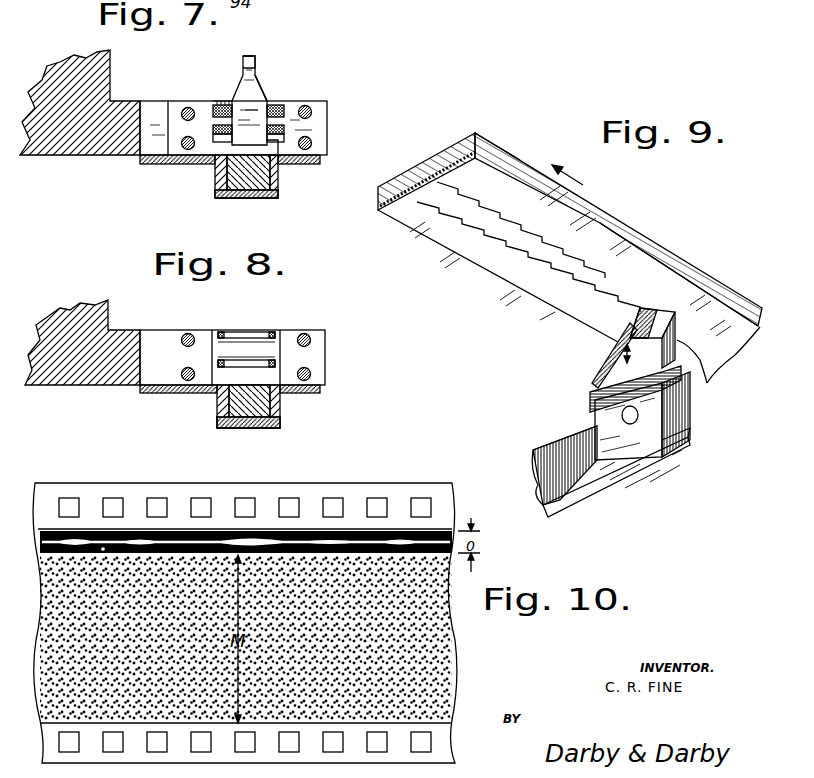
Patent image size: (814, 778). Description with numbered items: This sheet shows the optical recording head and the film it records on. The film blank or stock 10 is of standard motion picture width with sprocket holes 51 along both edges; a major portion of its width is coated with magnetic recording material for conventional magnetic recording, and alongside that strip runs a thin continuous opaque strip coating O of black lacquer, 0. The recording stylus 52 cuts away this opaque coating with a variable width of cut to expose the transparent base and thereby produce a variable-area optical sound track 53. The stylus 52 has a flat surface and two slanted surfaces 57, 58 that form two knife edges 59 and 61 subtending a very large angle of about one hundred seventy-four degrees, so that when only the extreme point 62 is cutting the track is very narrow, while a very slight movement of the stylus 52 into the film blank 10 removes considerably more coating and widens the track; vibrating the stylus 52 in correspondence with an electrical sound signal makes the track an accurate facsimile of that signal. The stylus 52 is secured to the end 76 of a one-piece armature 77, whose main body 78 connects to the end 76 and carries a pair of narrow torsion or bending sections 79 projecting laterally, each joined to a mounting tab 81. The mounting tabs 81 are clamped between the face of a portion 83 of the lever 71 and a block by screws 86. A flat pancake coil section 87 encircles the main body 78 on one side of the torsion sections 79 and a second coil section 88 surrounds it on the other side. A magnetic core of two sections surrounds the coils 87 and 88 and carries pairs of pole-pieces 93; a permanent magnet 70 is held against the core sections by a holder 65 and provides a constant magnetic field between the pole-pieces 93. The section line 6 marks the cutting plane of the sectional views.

In FIG. 7, the section line 6- 6 is at (277, 30).
In FIG. 9, the opaque strip coating 0 is at (500, 152).
In FIG. 9, the film blank or stock 10 is at (456, 148).
In FIG. 10, the film blank or stock 10 is at (190, 483).
In FIG. 10, the sprocket holes 51 is at (420, 500).
In FIG. 7, the recording stylus 52 is at (256, 65).
In FIG. 9, the recording stylus 52 is at (603, 373).
In FIG. 9, the variable-area optical sound track 53 is at (603, 258).
In FIG. 10, the variable-area optical sound track 53 is at (100, 553).
In FIG. 9, the slanted surface 57 is at (615, 342).
In FIG. 9, the slanted surface 58 is at (676, 315).
In FIG. 9, the knife edge 59 is at (623, 315).
In FIG. 9, the knife edge 61 is at (684, 270).
In FIG. 9, the extreme point 62 is at (650, 300).
In FIG. 7, the holder 65 is at (278, 190).
In FIG. 8, the holder 65 is at (280, 423).
In FIG. 7, the permanent magnet 70 is at (237, 177).
In FIG. 8, the permanent magnet 70 is at (248, 422).
In FIG. 8, the lever 71 is at (40, 386).
In FIG. 7, the end of armature 76 is at (243, 70).
In FIG. 9, the end of armature 76 is at (600, 483).
In FIG. 7, the armature 77 is at (267, 95).
In FIG. 7, the main body of armature 78 is at (238, 97).
In FIG. 7, the torsion or bending sections 79 is at (213, 110).
In FIG. 7, the mounting tabs 81 is at (175, 140).
In FIG. 8, the portion of lever 83 is at (325, 364).
In FIG. 7, the screws 86 is at (330, 145).
In FIG. 8, the screws 86 is at (188, 334).
In FIG. 7, the flat pancake coil section 87 is at (218, 103).
In FIG. 7, the second coil section 88 is at (283, 160).
In FIG. 8, the pole-pieces 93 is at (257, 366).